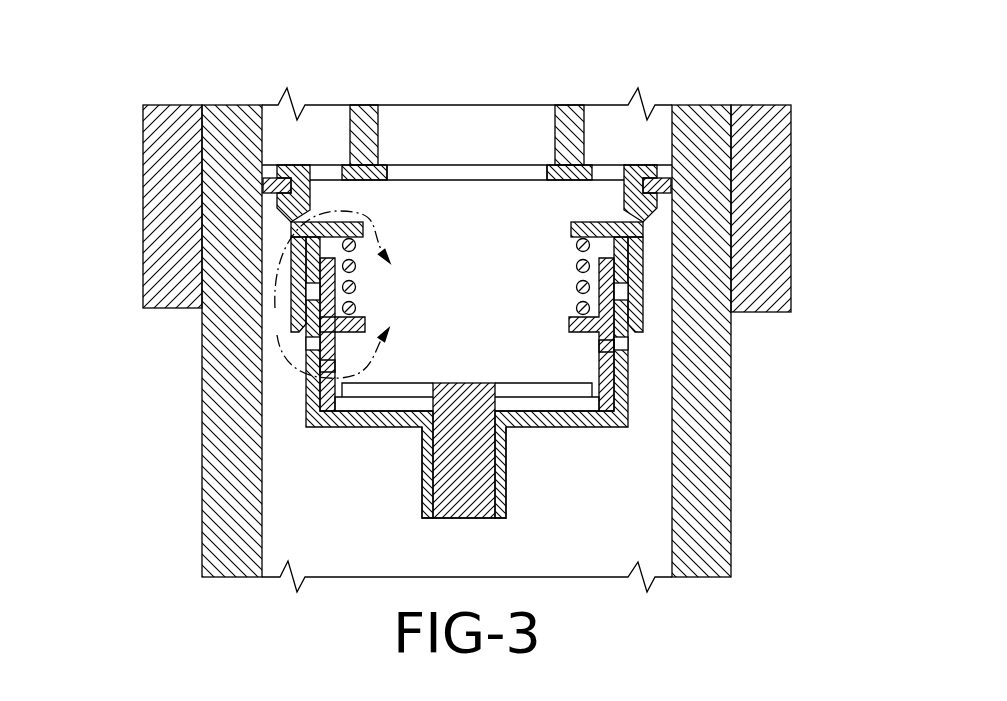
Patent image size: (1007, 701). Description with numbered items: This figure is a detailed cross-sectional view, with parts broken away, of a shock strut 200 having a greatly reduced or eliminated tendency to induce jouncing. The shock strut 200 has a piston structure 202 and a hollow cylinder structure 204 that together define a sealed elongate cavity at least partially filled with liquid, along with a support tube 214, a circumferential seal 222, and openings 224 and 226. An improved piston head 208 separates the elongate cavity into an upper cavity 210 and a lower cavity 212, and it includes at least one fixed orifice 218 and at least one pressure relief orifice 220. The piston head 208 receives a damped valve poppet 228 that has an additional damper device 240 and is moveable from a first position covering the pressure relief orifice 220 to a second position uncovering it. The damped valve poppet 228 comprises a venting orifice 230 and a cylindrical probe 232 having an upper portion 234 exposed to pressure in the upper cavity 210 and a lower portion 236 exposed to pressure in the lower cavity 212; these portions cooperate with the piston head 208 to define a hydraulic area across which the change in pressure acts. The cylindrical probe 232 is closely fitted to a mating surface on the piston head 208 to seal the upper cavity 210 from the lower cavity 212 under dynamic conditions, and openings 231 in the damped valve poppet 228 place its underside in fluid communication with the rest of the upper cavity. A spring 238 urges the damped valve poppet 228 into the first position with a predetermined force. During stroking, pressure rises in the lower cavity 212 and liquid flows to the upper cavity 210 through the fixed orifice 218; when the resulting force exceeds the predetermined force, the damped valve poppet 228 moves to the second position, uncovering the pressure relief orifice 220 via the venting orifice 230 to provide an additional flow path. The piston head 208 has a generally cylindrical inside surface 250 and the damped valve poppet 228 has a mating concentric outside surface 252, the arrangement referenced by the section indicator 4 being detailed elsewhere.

The shock strut 200 is at (136, 181).
The piston structure 202 is at (790, 153).
The cylinder structure 204 is at (732, 520).
The piston head 208 is at (633, 407).
The upper cavity 210 is at (444, 143).
The lower cavity 212 is at (587, 540).
The support tube 214 is at (569, 104).
The fixed orifice 218 is at (293, 220).
The pressure relief orifice 220 is at (309, 349).
The circumferential seal 222 is at (268, 177).
The opening 224 is at (607, 168).
The opening 226 is at (457, 172).
The damped valve poppet 228 is at (555, 313).
The venting orifice 230 is at (326, 367).
The openings 231 is at (415, 393).
The cylindrical probe 232 is at (503, 476).
The upper portion 234 is at (470, 383).
The lower portion 236 is at (452, 519).
The spring 238 is at (580, 266).
The damper device 240 is at (304, 313).
The inside surface 250 is at (613, 350).
The outside surface 252 is at (613, 373).
The section line FIG. 4 is at (340, 294).